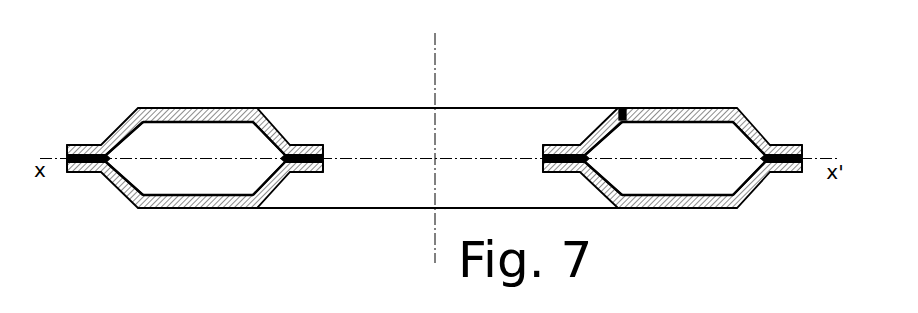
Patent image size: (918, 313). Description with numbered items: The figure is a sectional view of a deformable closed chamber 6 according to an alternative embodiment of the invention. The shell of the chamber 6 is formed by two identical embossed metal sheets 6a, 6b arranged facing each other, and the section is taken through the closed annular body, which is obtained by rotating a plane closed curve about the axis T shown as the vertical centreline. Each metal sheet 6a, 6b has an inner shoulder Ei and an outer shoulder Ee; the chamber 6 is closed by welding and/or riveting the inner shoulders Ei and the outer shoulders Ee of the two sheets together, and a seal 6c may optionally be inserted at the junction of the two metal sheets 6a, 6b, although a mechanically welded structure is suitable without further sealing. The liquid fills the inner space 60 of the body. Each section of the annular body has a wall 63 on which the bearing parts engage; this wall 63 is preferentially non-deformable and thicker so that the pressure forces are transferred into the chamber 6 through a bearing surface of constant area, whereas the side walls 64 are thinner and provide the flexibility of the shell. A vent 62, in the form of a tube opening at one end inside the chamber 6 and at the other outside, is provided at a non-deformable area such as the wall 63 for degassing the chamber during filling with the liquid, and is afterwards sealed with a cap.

The chamber 6 is at (793, 87).
The embossed metal sheet 6a is at (195, 107).
The embossed metal sheet 6b is at (195, 208).
The seal 6c is at (67, 156).
The inner space 60 is at (175, 186).
The vent 62 is at (618, 107).
The wall 63 is at (232, 110).
The side walls 64 is at (277, 135).
The outer shoulder Ee is at (69, 148).
The inner shoulder Ei is at (320, 150).
The axis T is at (433, 66).